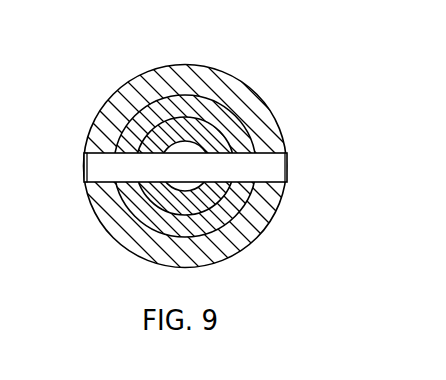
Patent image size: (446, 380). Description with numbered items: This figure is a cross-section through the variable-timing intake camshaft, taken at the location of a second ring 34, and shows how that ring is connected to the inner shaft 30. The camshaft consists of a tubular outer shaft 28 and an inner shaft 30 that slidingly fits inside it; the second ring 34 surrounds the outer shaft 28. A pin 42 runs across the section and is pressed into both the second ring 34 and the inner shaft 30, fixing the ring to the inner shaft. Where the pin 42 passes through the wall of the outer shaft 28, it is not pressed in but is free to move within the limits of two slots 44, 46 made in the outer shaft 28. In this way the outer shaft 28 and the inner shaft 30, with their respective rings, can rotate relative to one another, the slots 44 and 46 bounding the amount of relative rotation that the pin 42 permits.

The outer shaft 28 is at (158, 108).
The inner shaft 30 is at (247, 215).
The second ring 34 is at (233, 90).
The pin 42 is at (263, 168).
The slot 44 is at (128, 200).
The slot 46 is at (237, 138).